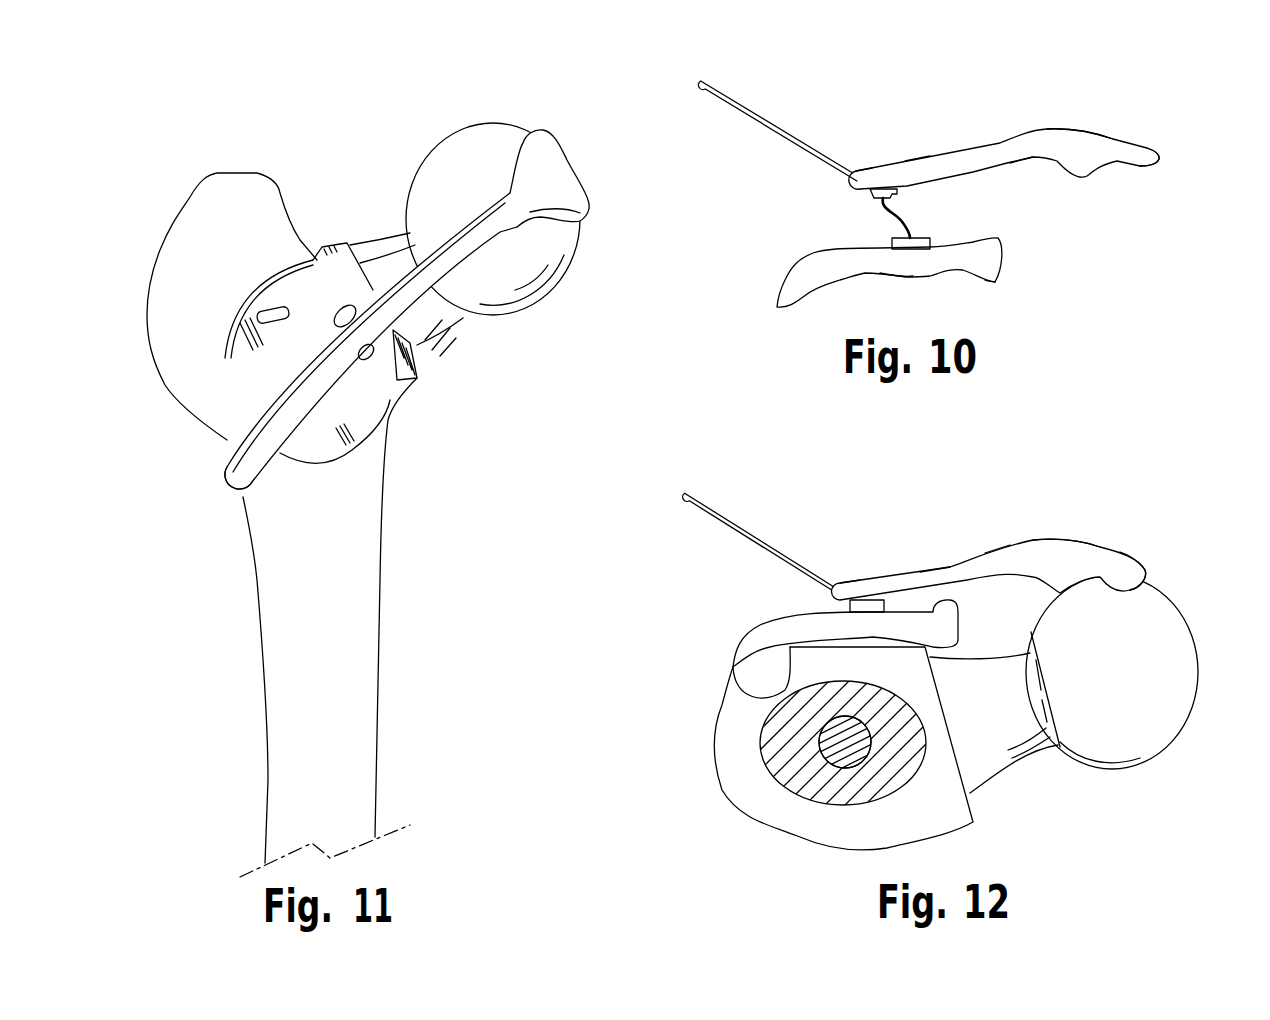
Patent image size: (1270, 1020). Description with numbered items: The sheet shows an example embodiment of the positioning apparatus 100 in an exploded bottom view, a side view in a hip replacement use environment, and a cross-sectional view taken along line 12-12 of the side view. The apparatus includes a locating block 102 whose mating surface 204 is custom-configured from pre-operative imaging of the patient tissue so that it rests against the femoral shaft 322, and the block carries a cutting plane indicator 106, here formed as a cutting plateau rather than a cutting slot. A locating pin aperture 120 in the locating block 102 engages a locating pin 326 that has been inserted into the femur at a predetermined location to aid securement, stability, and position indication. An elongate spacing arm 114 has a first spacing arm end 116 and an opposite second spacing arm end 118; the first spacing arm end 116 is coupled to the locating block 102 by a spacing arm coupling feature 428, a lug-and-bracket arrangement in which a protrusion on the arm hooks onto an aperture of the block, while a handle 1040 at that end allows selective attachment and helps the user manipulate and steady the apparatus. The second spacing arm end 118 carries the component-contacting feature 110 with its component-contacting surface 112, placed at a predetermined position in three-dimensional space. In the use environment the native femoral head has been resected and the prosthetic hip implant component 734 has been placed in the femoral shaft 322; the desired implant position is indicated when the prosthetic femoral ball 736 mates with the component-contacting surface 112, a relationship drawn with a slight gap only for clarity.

In FIG. 11, the positioning apparatus 100 is at (336, 283).
In FIG. 10, the positioning apparatus 100 is at (852, 93).
In FIG. 12, the positioning apparatus 100 is at (877, 507).
In FIG. 11, the locating block 102 is at (347, 407).
In FIG. 10, the locating block 102 is at (987, 257).
In FIG. 11, the cutting plane indicator 106 is at (360, 263).
In FIG. 10, the cutting plane indicator 106 is at (1003, 272).
In FIG. 11, the component-contacting feature 110 is at (547, 160).
In FIG. 10, the component-contacting feature 110 is at (1083, 130).
In FIG. 12, the component-contacting feature 110 is at (1093, 543).
In FIG. 10, the component-contacting surface 112 is at (1113, 160).
In FIG. 12, the component-contacting surface 112 is at (1145, 590).
In FIG. 10, the spacing arm 114 is at (916, 157).
In FIG. 12, the spacing arm 114 is at (935, 567).
In FIG. 10, the first spacing arm end 116 is at (868, 165).
In FIG. 12, the first spacing arm end 116 is at (847, 573).
In FIG. 10, the second spacing arm end 118 is at (1028, 165).
In FIG. 12, the second spacing arm end 118 is at (1007, 540).
In FIG. 11, the locating pin aperture 120 is at (257, 317).
In FIG. 10, the mating surface 204 is at (915, 276).
In FIG. 12, the mating surface 204 is at (722, 690).
In FIG. 11, the femoral shaft 322 is at (384, 576).
In FIG. 12, the femoral shaft 322 is at (890, 777).
In FIG. 11, the locating pin 326 is at (262, 305).
In FIG. 10, the spacing arm coupling feature 428 is at (897, 213).
In FIG. 11, the prosthetic hip implant component 734 is at (466, 324).
In FIG. 12, the prosthetic hip implant component 734 is at (843, 757).
In FIG. 12, the prosthetic femoral ball 736 is at (1173, 712).
In FIG. 11, the handle 1040 is at (230, 437).
In FIG. 10, the handle 1040 is at (765, 112).
In FIG. 12, the handle 1040 is at (720, 507).
In FIG. 11, the section line 12 is at (640, 208).